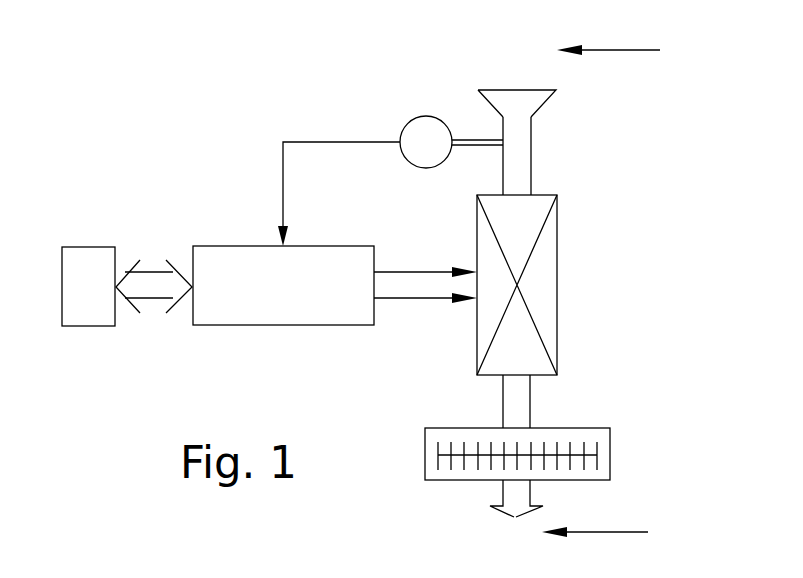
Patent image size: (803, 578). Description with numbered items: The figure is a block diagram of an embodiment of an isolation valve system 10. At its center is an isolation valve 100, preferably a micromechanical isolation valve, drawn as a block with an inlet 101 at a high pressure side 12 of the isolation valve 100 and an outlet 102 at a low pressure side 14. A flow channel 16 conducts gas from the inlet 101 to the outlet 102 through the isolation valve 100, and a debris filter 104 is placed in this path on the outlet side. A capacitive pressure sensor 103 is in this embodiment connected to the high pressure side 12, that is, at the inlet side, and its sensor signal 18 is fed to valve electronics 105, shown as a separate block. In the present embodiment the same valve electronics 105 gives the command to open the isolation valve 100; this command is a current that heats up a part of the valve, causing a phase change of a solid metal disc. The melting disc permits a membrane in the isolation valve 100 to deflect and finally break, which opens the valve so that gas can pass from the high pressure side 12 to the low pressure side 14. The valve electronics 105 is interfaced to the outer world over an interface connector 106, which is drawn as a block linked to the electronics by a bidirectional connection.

The isolation valve system 10 is at (128, 148).
The high pressure side 12 is at (628, 53).
The low pressure side 14 is at (615, 533).
The flow channel 16 is at (525, 160).
The sensor signal 18 is at (283, 168).
The isolation valve 100 is at (545, 288).
The inlet 101 is at (515, 92).
The outlet 102 is at (518, 508).
The capacitive pressure sensor 103 is at (420, 128).
The debris filter 104 is at (605, 440).
The valve electronics 105 is at (277, 313).
The interface connector 106 is at (82, 258).